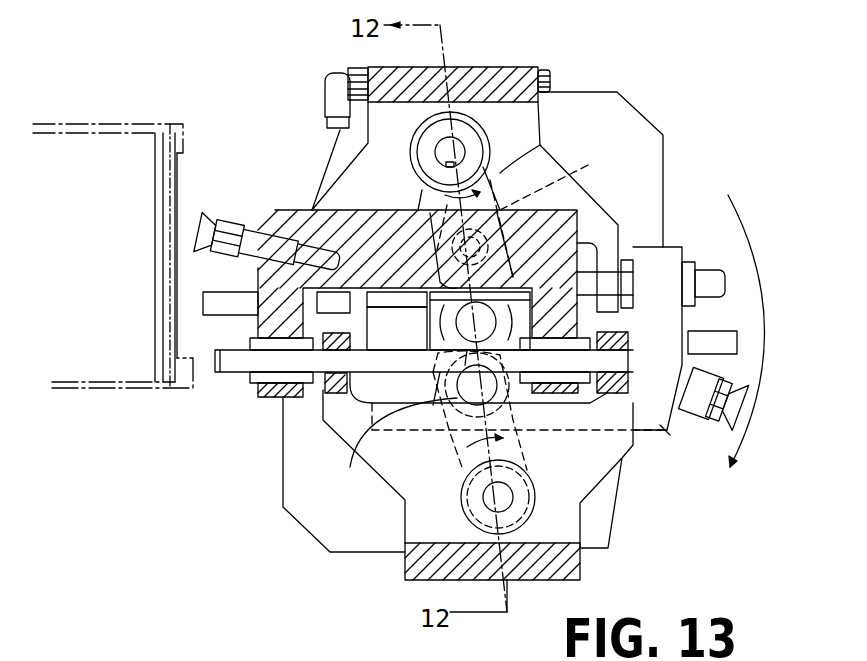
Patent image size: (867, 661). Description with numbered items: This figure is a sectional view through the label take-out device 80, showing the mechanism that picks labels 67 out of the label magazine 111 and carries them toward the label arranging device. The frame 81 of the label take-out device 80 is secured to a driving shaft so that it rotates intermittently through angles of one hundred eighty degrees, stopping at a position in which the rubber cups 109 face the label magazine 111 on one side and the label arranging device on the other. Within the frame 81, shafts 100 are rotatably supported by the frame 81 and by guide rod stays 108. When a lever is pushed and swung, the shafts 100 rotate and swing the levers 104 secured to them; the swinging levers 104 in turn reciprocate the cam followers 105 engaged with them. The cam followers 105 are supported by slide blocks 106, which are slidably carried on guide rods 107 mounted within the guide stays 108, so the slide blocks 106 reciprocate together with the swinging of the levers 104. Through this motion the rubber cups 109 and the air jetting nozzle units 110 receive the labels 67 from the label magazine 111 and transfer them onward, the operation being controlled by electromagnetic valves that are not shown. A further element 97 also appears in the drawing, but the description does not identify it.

The label 67 is at (180, 182).
The label take-out device 80 is at (647, 83).
The frame 81 is at (467, 67).
The housing portion 97 is at (234, 653).
The shaft 100 is at (457, 135).
The lever 104 is at (542, 145).
The cam follower 105 is at (343, 466).
The slide block 106 is at (277, 213).
The guide rod 107 is at (715, 268).
The guide rod stay 108 is at (347, 183).
The rubber cup 109 is at (197, 238).
The air jetting nozzle unit 110 is at (203, 302).
The label magazine 111 is at (115, 122).